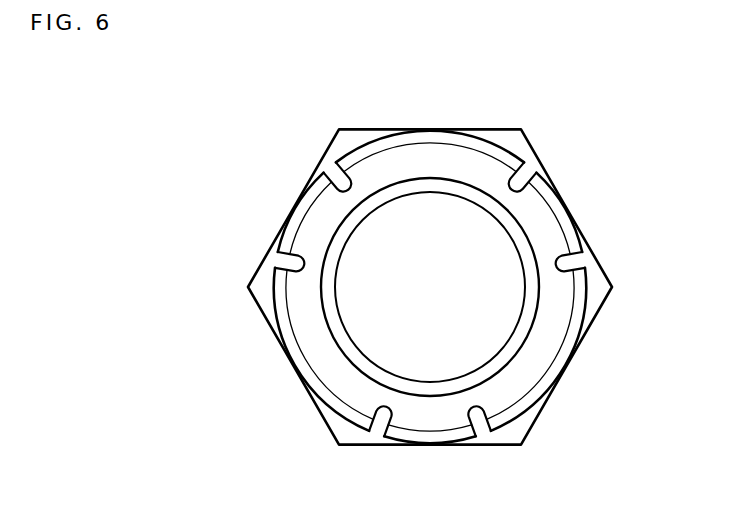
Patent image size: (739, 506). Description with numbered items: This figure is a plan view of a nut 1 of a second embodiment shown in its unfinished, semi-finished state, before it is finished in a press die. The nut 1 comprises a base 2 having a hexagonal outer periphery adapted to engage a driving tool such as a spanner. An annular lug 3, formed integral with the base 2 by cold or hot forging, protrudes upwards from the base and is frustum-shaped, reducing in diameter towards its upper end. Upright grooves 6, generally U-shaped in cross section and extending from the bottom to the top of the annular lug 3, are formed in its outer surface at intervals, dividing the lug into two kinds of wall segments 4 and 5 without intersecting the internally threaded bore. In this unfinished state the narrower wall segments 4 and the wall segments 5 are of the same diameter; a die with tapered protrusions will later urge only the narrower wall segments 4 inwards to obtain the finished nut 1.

The nut 1 is at (503, 124).
The base 2 is at (319, 426).
The annular lug 3 is at (594, 322).
The wall segments 4 is at (292, 213).
The wall segments 5 is at (441, 145).
The grooves 6 is at (333, 178).